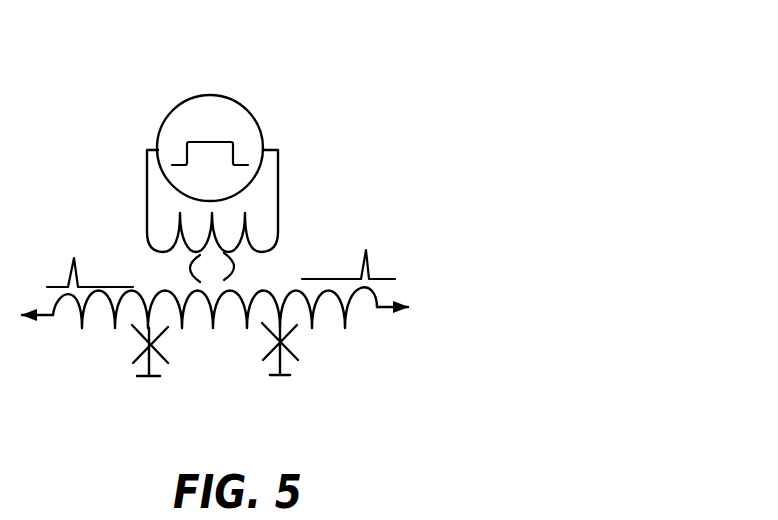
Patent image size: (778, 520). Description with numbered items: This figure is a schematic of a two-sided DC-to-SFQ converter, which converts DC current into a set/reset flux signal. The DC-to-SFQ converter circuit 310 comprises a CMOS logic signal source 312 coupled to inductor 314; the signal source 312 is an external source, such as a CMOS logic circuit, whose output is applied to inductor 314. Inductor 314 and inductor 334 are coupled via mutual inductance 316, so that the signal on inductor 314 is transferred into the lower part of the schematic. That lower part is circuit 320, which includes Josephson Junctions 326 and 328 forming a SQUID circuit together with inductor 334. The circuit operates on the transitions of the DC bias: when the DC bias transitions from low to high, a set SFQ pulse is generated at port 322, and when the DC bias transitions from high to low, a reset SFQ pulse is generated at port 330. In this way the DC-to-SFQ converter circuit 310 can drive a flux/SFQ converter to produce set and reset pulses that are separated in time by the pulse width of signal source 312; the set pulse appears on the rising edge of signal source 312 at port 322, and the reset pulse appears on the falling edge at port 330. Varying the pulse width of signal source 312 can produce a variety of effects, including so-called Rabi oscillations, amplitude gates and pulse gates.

The DC-to-SFQ converter circuit 310 is at (292, 111).
The signal source 312 is at (181, 95).
The inductor 314 is at (283, 213).
The mutual inductance 316 is at (240, 272).
The circuit 320 is at (478, 318).
The port 322 is at (45, 318).
The Josephson Junction 326 is at (302, 352).
The Josephson Junction 328 is at (135, 342).
The port 330 is at (392, 313).
The inductor 334 is at (213, 328).